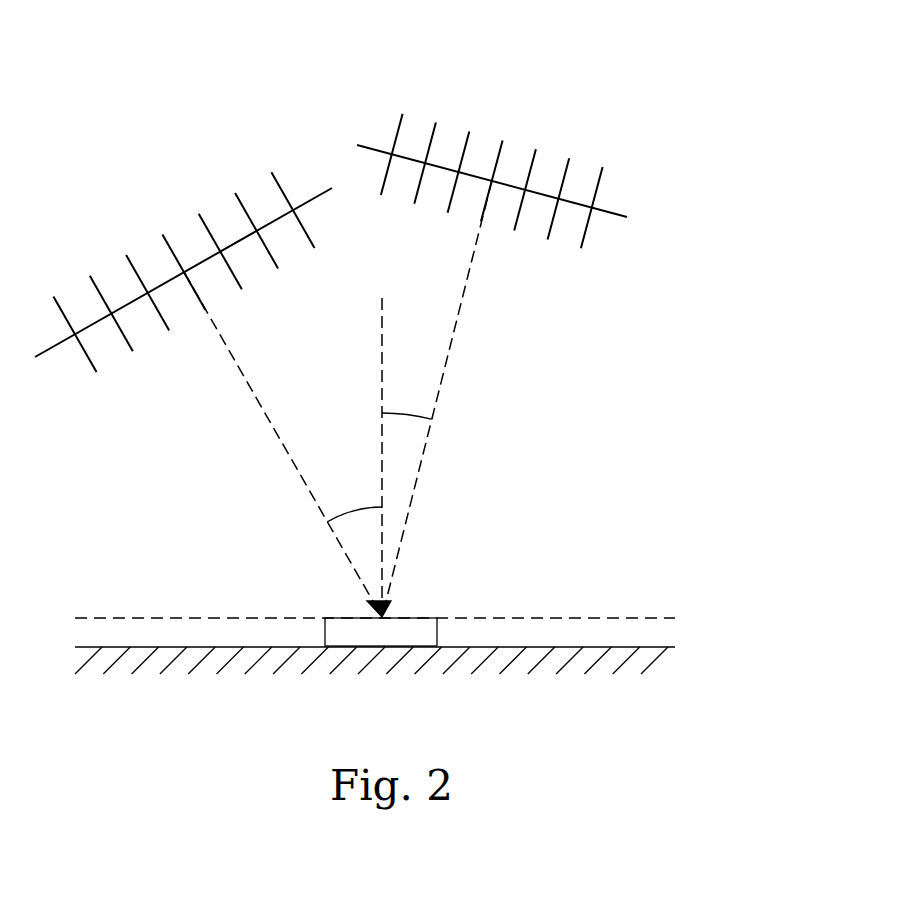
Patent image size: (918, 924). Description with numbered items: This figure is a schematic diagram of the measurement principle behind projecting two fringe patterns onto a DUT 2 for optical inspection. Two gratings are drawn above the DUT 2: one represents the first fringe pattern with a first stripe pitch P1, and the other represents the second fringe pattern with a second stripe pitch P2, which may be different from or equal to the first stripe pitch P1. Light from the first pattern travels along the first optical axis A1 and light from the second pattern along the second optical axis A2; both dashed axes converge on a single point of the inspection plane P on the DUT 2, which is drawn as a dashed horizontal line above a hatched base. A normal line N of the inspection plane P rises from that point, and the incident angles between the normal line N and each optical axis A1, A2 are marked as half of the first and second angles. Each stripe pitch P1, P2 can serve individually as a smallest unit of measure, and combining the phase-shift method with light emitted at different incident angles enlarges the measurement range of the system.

The DUT 2 is at (437, 633).
The inspection plane P is at (618, 618).
The normal line N is at (383, 435).
The first optical axis A1 is at (441, 373).
The second optical axis A2 is at (275, 433).
The first stripe pitch P1 is at (535, 107).
The second stripe pitch P2 is at (143, 200).